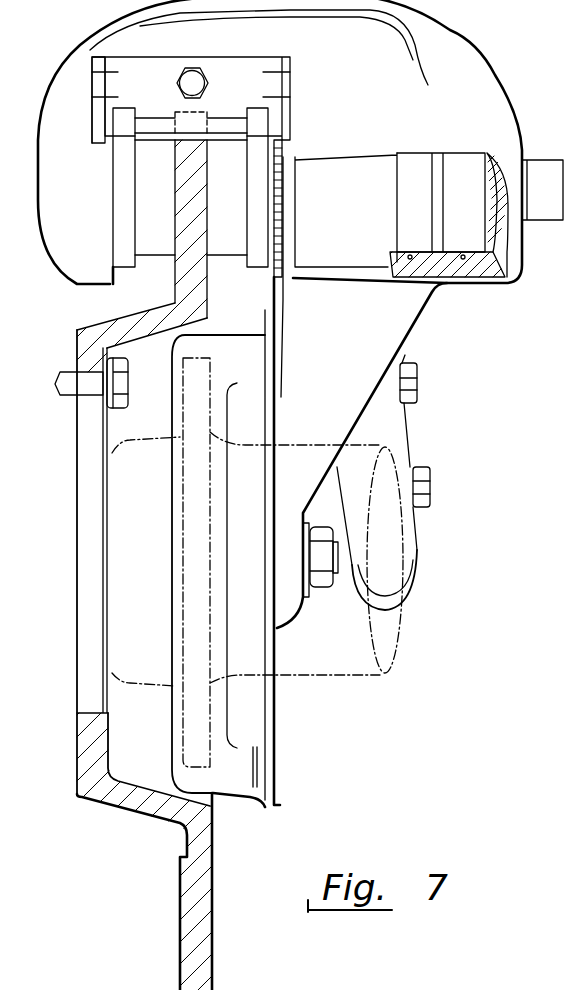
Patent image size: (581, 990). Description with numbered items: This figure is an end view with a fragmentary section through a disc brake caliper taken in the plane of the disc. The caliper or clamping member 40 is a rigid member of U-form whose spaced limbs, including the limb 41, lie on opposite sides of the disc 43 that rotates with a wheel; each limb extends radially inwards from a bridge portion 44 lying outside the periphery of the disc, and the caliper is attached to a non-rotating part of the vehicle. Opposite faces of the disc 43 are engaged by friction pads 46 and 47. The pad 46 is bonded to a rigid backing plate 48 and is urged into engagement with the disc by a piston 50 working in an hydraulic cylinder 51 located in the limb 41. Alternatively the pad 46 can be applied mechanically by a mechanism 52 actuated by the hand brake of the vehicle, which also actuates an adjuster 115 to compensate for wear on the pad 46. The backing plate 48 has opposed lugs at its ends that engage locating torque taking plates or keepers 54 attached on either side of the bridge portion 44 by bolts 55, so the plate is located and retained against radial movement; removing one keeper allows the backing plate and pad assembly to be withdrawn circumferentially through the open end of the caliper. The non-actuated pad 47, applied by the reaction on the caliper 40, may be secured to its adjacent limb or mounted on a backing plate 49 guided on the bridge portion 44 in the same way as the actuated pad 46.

The caliper or clamping member 40 is at (390, 80).
The limb 41 is at (413, 293).
The disc 43 is at (180, 263).
The bridge portion 44 is at (271, 50).
The friction pad 46 is at (219, 237).
The friction pad 47 is at (143, 233).
The backing plate 48 is at (262, 247).
The backing plate 49 is at (122, 200).
The piston 50 is at (468, 173).
The hydraulic cylinder 51 is at (497, 247).
The mechanism 52 is at (360, 247).
The locating torque taking plate or keeper 54 is at (158, 80).
The bolt 55 is at (193, 80).
The adjuster 115 is at (293, 277).